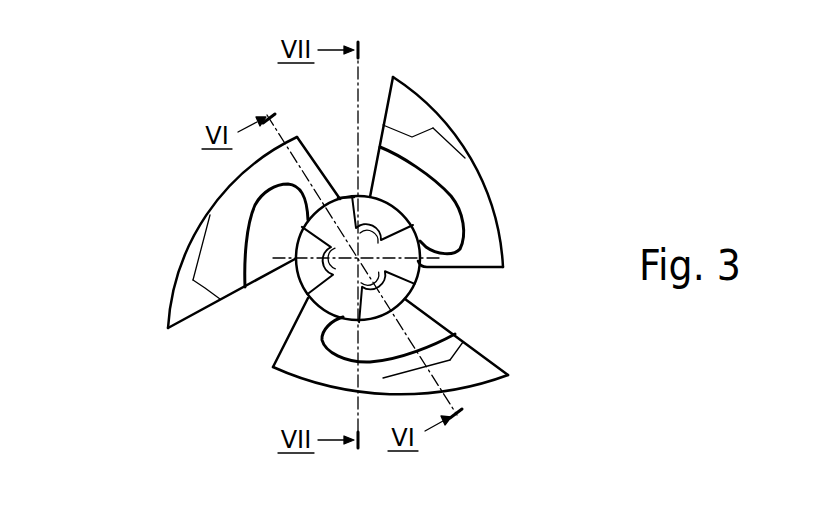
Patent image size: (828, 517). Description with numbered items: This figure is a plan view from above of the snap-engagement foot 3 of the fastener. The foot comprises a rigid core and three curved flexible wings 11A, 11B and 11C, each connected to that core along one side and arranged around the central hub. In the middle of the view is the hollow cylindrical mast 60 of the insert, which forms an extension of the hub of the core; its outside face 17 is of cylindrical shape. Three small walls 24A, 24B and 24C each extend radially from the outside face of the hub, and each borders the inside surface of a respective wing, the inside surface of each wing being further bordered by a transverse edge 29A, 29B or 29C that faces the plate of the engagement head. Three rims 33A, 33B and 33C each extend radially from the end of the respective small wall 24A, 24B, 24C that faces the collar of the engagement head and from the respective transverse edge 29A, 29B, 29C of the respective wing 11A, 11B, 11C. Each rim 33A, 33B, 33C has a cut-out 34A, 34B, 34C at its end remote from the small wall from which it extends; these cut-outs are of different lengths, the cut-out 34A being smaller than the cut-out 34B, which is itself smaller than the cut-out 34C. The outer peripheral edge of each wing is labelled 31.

The snap-engagement foot 3 is at (548, 248).
The curved flexible wing 11A is at (262, 228).
The curved flexible wing 11B is at (437, 193).
The curved flexible wing 11C is at (377, 345).
The outside face 17 is at (293, 279).
The small wall 24A is at (304, 148).
The small wall 24B is at (457, 270).
The small wall 24C is at (301, 327).
The transverse edge 29A is at (287, 167).
The transverse edge 29B is at (442, 160).
The transverse edge 29C is at (330, 378).
The blade outer peripheral edge 31 is at (442, 110).
The rim 33A is at (195, 256).
The rim 33B is at (468, 218).
The rim 33C is at (303, 368).
The cut-out 34A is at (201, 312).
The cut-out 34B is at (414, 124).
The cut-out 34C is at (470, 365).
The hollow cylindrical mast 60 is at (355, 197).